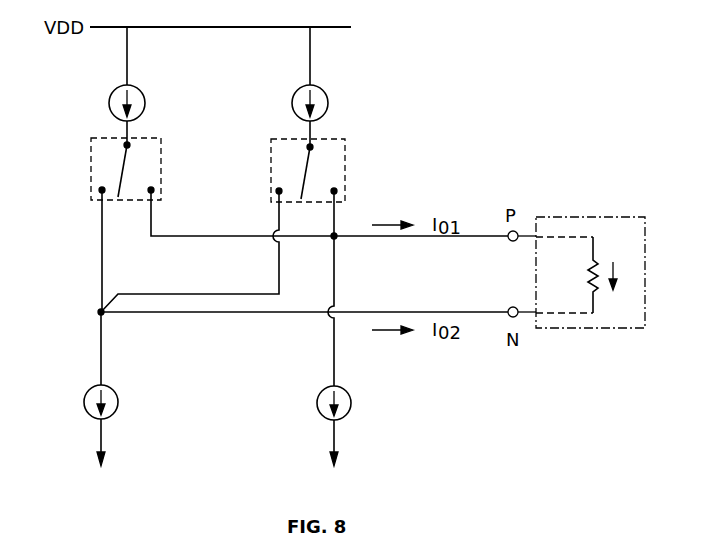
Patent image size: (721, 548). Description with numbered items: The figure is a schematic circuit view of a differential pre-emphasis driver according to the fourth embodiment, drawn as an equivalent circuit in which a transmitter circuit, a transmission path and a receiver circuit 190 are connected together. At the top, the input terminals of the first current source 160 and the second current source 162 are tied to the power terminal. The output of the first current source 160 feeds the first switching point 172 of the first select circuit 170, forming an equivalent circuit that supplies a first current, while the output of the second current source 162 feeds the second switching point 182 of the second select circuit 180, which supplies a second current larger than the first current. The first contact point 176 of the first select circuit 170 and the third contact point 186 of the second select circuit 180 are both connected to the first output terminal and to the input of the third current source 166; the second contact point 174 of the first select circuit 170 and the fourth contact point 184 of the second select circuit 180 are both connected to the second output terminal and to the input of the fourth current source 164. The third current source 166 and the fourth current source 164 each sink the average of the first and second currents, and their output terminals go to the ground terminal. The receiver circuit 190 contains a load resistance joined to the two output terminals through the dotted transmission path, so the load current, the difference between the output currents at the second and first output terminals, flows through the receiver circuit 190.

The first current source 160 is at (146, 103).
The second current source 162 is at (329, 103).
The fourth current source 164 is at (108, 386).
The third current source 166 is at (320, 386).
The first select circuit 170 is at (104, 137).
The first switching point 172 is at (124, 145).
The second contact point 174 is at (99, 190).
The first contact point 176 is at (153, 186).
The second select circuit 180 is at (347, 152).
The second switching point 182 is at (307, 147).
The fourth contact point 184 is at (276, 191).
The third contact point 186 is at (337, 191).
The receiver circuit 190 is at (598, 217).